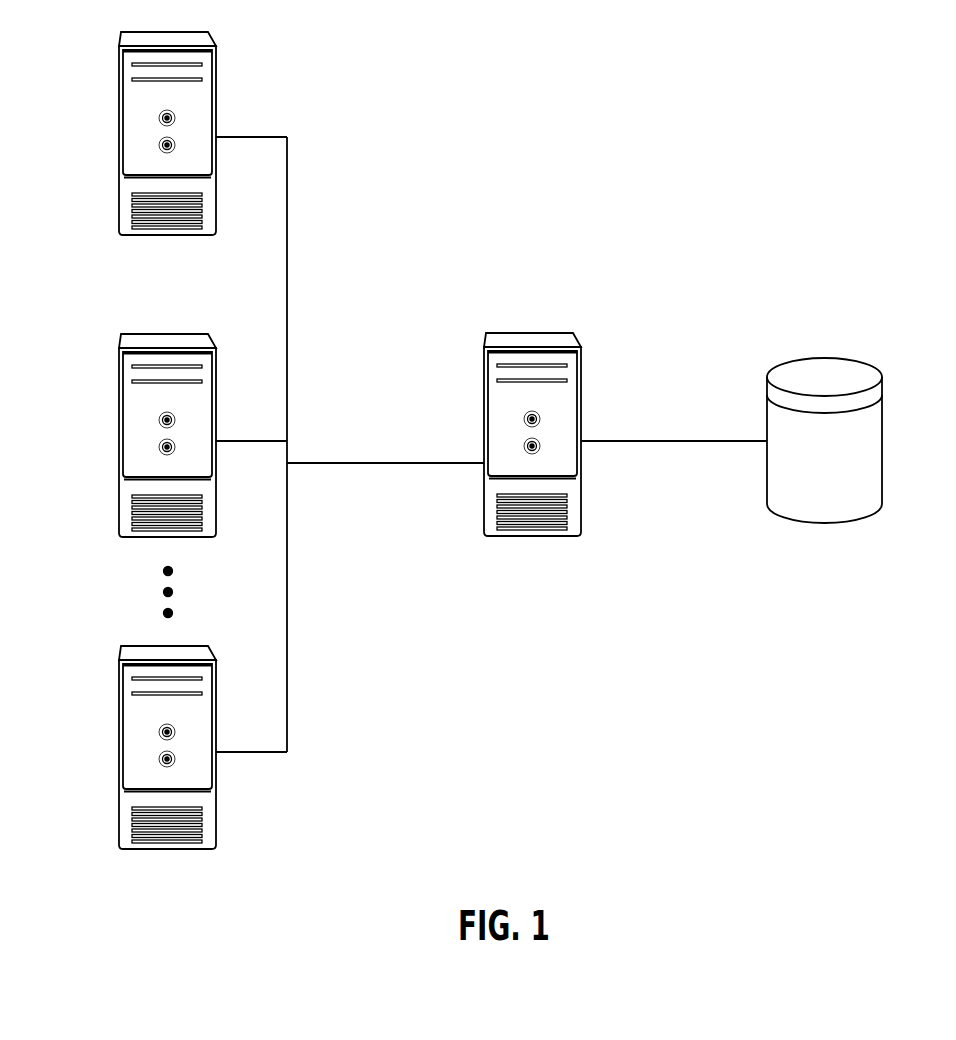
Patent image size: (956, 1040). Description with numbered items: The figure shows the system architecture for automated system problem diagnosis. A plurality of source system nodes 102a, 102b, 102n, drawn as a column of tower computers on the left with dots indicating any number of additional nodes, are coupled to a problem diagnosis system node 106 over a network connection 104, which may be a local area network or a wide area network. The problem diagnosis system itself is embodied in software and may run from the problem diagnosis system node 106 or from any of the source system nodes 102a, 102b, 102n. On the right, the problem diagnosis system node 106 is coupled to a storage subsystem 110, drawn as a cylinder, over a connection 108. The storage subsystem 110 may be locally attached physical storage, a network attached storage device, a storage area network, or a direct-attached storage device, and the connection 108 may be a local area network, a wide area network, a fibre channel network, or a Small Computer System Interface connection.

The source system node 102a is at (119, 138).
The source system node 102b is at (119, 441).
The source system node 102n is at (119, 752).
The network connection 104 is at (380, 462).
The problem diagnosis system node 106 is at (541, 333).
The connection 108 is at (660, 441).
The storage subsystem 110 is at (819, 358).